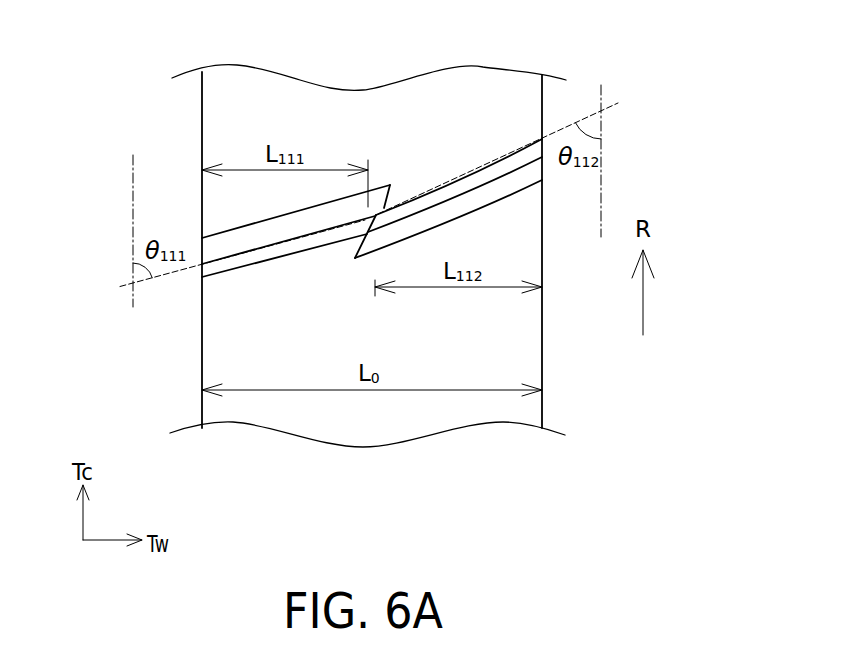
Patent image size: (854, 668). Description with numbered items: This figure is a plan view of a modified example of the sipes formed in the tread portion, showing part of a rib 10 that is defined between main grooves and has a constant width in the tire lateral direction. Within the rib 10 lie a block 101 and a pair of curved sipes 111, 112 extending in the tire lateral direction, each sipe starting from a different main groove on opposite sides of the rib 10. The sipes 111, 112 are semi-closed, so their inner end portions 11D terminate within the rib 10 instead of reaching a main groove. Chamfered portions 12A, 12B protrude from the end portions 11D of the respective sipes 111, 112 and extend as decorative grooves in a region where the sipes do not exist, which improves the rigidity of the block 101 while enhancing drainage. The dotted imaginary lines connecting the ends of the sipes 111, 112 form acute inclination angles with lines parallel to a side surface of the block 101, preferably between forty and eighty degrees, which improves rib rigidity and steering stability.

The rib 10 is at (371, 288).
The block 101 is at (245, 118).
The sipe 111 is at (296, 264).
The sipe 112 is at (448, 136).
The end portion 11D is at (418, 200).
The chamfered portion 12A is at (231, 243).
The chamfered portion 12B is at (475, 181).